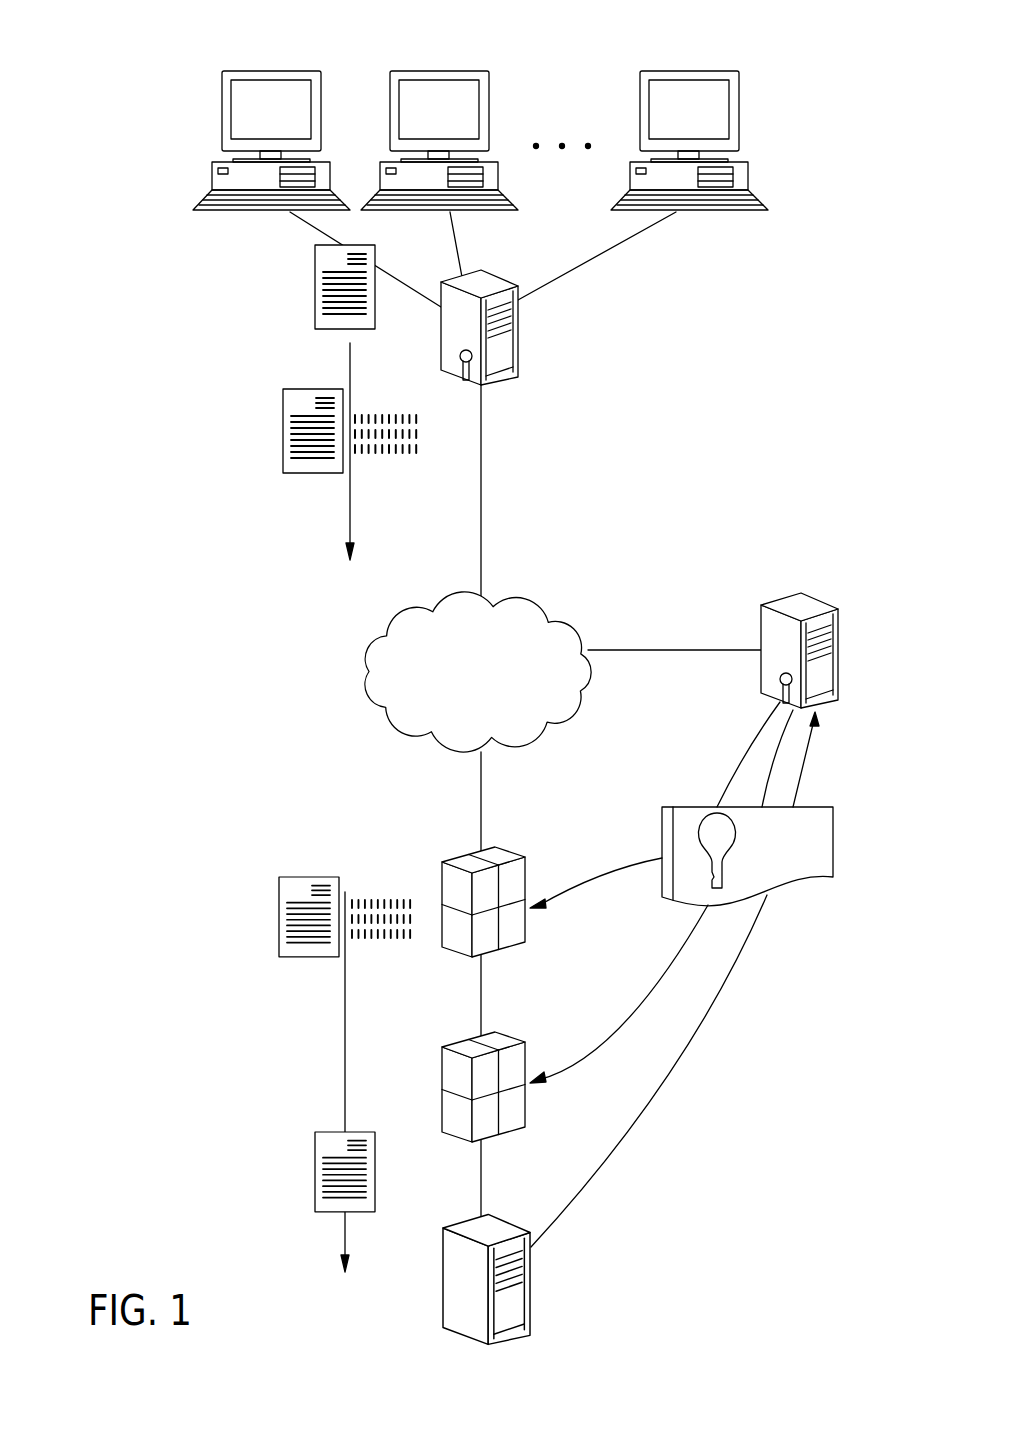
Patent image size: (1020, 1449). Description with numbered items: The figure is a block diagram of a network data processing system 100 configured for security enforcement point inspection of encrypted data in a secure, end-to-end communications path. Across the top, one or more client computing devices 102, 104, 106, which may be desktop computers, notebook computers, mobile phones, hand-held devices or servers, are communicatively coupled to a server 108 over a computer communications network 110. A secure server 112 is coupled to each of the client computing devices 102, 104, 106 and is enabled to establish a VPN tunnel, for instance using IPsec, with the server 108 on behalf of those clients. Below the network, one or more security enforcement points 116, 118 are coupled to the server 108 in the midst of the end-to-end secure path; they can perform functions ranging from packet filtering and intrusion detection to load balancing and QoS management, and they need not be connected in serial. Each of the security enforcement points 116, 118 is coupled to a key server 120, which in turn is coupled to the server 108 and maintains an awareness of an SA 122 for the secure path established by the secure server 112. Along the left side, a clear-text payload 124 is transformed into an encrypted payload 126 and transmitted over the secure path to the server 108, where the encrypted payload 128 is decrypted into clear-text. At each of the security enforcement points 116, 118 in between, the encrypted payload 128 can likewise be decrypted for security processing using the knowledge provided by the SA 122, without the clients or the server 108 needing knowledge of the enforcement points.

The network data processing system 100 is at (140, 264).
The client computing device 102 is at (263, 70).
The client computing device 104 is at (431, 70).
The client computing device 106 is at (681, 70).
The server 108 is at (531, 1285).
The computer communications network 110 is at (550, 592).
The secure server 112 is at (519, 334).
The security enforcement point 116 is at (527, 930).
The security enforcement point 118 is at (527, 1115).
The key server 120 is at (840, 655).
The security association 122 is at (835, 838).
The clear-text payload 124 is at (314, 286).
The encrypted payload 126 is at (283, 432).
The encrypted payload 128 is at (279, 912).